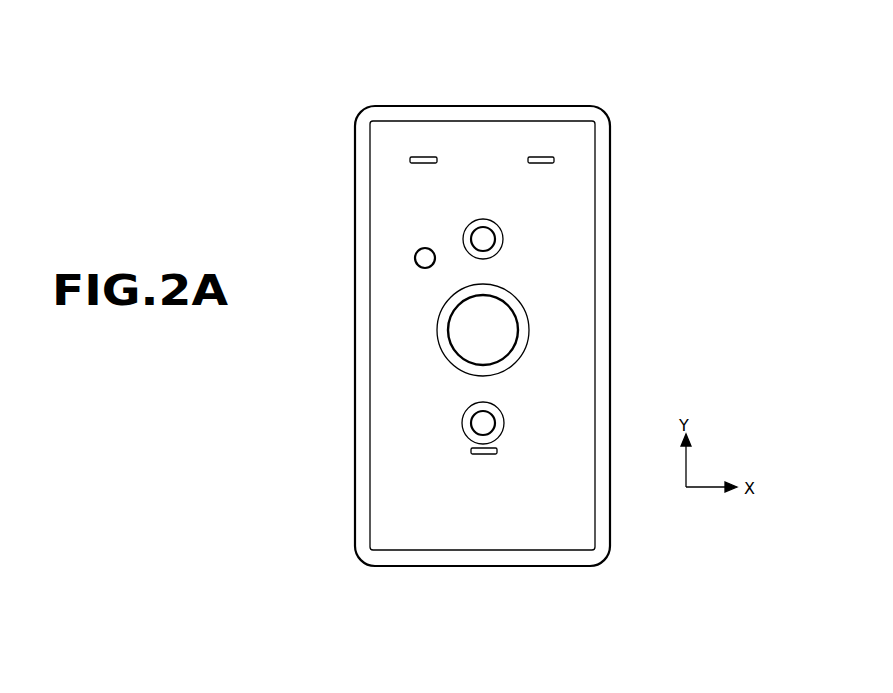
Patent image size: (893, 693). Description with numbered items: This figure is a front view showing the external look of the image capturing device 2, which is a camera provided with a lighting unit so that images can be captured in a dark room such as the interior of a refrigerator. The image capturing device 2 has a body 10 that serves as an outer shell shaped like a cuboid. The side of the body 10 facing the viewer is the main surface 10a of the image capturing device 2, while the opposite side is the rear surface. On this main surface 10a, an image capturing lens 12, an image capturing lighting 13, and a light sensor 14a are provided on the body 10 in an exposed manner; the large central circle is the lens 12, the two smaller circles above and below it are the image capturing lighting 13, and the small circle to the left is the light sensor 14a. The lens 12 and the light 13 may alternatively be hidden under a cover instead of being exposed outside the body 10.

The image capturing device 2 is at (490, 294).
The body 10 is at (610, 143).
The main surface 10a is at (483, 142).
The image capturing lens 12 is at (508, 325).
The image capturing lighting 13 is at (490, 238).
The light sensor 14a is at (415, 258).